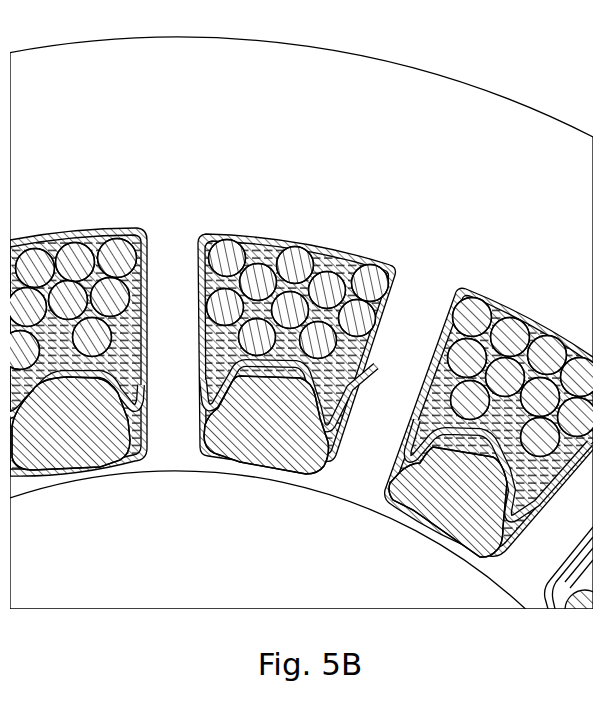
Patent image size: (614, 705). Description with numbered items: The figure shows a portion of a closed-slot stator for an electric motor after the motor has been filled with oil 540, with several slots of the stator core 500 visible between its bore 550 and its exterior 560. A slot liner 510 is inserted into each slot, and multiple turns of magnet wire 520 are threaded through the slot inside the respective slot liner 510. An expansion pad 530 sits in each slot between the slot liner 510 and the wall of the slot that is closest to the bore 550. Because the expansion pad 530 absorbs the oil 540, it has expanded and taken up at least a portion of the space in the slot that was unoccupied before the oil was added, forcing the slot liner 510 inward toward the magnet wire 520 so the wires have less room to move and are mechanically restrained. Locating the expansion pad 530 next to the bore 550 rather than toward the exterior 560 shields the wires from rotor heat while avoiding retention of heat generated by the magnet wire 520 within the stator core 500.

The stator core 500 is at (258, 149).
The slot liner 510 is at (344, 248).
The magnet wire 520 is at (258, 233).
The expansion pad 530 is at (300, 477).
The oil 540 is at (202, 350).
The bore 550 is at (134, 538).
The exterior of the stator core 560 is at (483, 89).